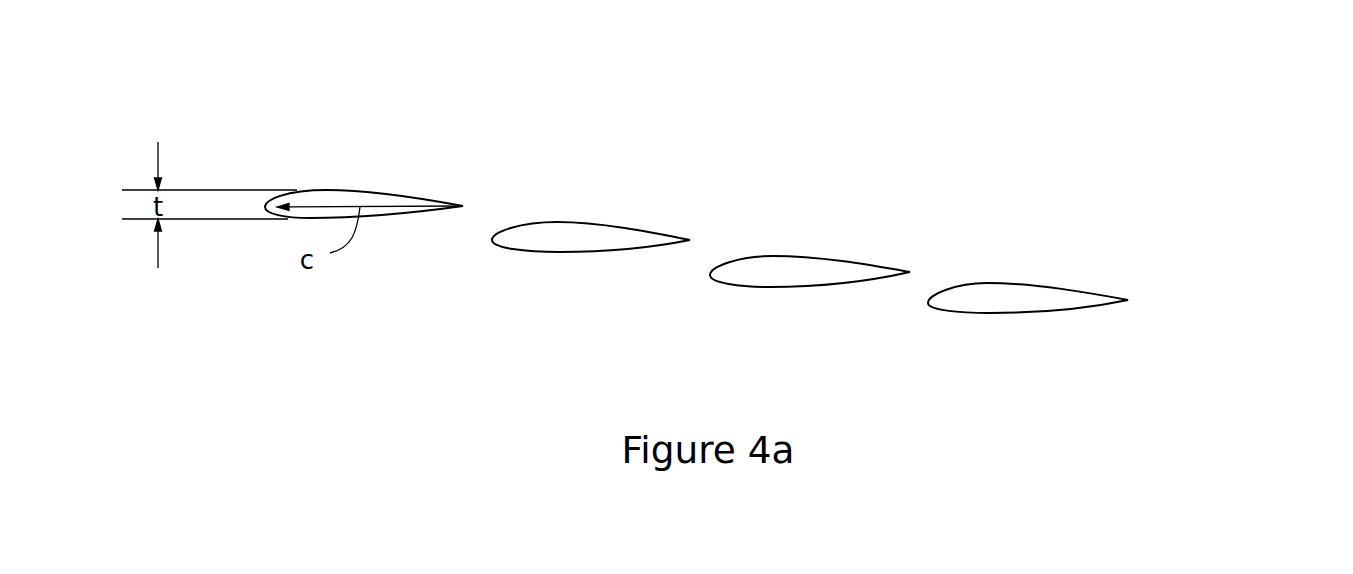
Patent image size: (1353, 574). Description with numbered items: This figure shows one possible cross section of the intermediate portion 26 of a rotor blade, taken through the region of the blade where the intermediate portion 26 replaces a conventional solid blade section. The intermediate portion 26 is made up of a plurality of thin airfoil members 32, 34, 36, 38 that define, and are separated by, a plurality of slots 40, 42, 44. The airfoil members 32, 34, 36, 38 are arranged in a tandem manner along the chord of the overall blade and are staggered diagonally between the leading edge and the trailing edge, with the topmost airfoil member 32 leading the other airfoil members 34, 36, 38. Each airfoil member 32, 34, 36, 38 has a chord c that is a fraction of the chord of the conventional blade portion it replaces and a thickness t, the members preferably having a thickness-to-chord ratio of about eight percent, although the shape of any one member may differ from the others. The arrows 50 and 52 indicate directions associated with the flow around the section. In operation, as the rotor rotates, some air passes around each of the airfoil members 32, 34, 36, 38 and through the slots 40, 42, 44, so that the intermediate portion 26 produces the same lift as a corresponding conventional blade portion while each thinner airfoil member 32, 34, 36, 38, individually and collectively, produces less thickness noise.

The intermediate portion 26 is at (975, 146).
The airfoil member 32 is at (348, 189).
The airfoil member 34 is at (650, 230).
The airfoil member 36 is at (910, 272).
The airfoil member 38 is at (1113, 303).
The slot 40 is at (434, 255).
The slot 42 is at (671, 285).
The slot 44 is at (883, 304).
The incoming flow direction 50 is at (170, 356).
The opposing flow direction 52 is at (1175, 242).